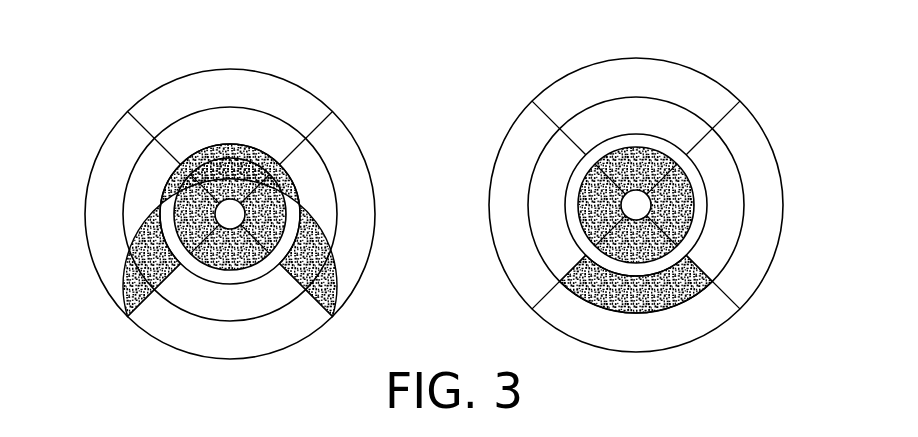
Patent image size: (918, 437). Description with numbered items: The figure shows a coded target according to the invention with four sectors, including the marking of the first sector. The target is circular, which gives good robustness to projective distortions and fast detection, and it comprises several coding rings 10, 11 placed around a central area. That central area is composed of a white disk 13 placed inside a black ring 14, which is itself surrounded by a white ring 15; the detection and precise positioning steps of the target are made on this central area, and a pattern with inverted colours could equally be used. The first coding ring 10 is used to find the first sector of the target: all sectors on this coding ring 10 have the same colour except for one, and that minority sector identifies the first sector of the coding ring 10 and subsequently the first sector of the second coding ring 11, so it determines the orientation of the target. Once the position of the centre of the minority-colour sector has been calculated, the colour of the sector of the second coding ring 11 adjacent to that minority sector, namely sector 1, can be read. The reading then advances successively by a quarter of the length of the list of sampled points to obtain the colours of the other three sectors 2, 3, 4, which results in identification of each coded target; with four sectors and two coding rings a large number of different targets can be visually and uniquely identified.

The sector 1 is at (484, 302).
The sector 2 is at (340, 256).
The sector 3 is at (384, 115).
The sector 4 is at (525, 162).
The first coding ring 10 is at (262, 120).
The second coding ring 11 is at (307, 105).
The white disk 13 is at (243, 207).
The black ring 14 is at (280, 240).
The white ring 15 is at (293, 213).